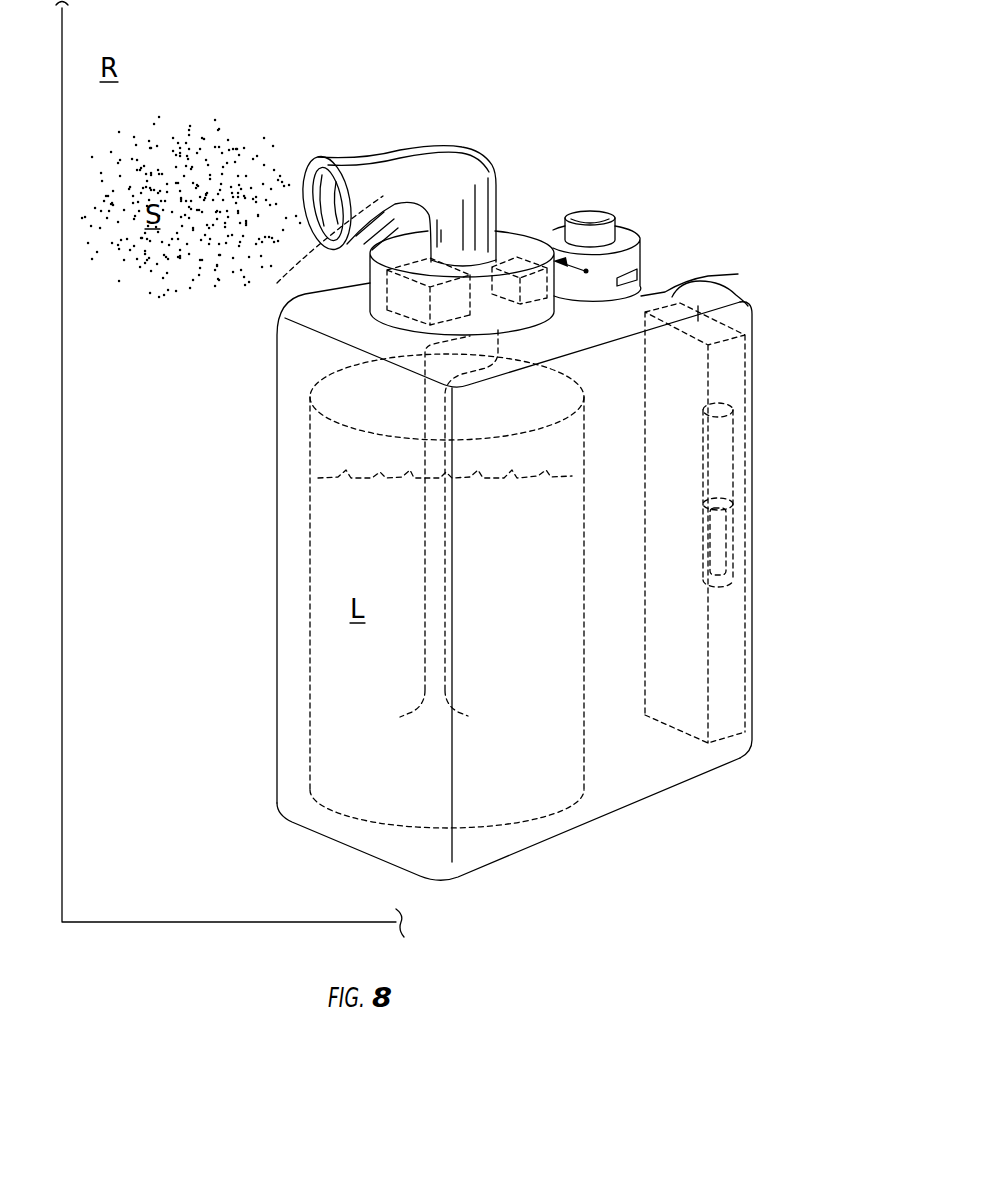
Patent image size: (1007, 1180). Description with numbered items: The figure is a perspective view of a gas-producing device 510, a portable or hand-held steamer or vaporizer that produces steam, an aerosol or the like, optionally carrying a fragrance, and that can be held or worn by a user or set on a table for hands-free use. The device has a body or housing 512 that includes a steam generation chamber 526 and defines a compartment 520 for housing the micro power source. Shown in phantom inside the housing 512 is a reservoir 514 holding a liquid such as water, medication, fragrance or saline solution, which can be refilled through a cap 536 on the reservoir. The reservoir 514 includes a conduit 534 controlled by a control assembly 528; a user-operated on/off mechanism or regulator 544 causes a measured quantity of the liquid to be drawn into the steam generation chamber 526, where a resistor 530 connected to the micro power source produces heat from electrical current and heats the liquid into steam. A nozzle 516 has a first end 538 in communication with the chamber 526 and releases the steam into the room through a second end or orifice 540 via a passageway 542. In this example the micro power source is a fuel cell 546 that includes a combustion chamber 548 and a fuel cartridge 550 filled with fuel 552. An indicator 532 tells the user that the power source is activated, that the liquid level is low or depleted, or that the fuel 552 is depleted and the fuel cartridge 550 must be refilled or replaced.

The gas-producing device 510 is at (566, 66).
The housing 512 is at (236, 666).
The reservoir 514 is at (537, 770).
The nozzle 516 is at (347, 187).
The compartment 520 is at (735, 637).
The steam generation chamber 526 is at (370, 291).
The control assembly 528 is at (620, 230).
The resistor 530 is at (520, 257).
The indicator 532 is at (640, 273).
The conduit 534 is at (452, 458).
The cap 536 is at (433, 413).
The first end 538 is at (462, 252).
The second end or orifice 540 is at (315, 170).
The passageway 542 is at (310, 247).
The on/off mechanism or regulator 544 is at (590, 220).
The fuel cell 546 is at (746, 535).
The combustion chamber 548 is at (733, 522).
The fuel cartridge 550 is at (733, 418).
The fuel 552 is at (720, 558).